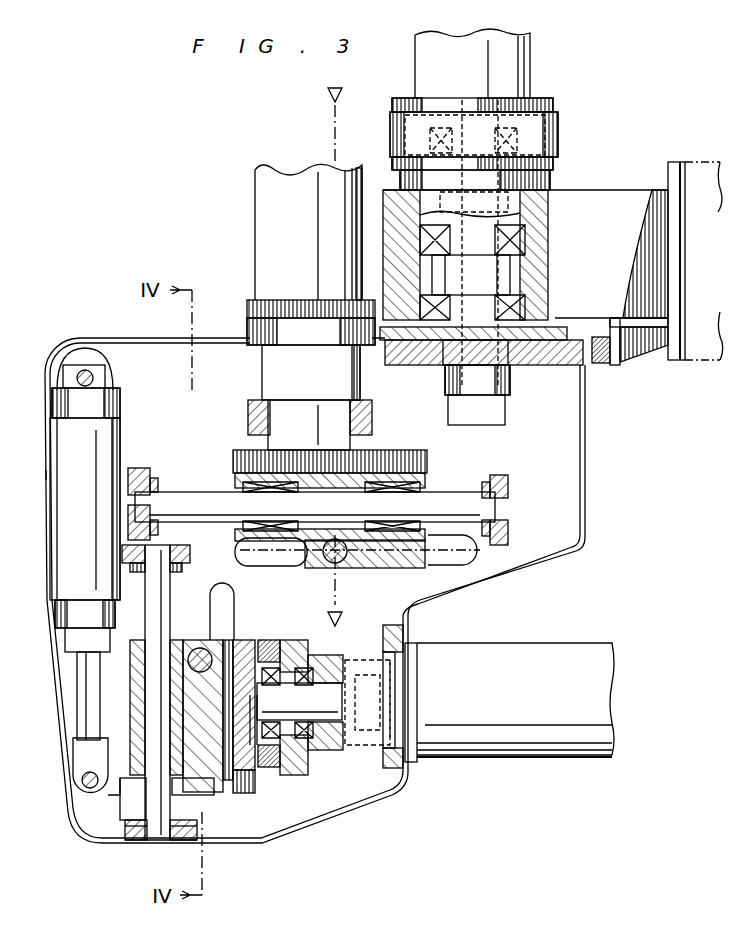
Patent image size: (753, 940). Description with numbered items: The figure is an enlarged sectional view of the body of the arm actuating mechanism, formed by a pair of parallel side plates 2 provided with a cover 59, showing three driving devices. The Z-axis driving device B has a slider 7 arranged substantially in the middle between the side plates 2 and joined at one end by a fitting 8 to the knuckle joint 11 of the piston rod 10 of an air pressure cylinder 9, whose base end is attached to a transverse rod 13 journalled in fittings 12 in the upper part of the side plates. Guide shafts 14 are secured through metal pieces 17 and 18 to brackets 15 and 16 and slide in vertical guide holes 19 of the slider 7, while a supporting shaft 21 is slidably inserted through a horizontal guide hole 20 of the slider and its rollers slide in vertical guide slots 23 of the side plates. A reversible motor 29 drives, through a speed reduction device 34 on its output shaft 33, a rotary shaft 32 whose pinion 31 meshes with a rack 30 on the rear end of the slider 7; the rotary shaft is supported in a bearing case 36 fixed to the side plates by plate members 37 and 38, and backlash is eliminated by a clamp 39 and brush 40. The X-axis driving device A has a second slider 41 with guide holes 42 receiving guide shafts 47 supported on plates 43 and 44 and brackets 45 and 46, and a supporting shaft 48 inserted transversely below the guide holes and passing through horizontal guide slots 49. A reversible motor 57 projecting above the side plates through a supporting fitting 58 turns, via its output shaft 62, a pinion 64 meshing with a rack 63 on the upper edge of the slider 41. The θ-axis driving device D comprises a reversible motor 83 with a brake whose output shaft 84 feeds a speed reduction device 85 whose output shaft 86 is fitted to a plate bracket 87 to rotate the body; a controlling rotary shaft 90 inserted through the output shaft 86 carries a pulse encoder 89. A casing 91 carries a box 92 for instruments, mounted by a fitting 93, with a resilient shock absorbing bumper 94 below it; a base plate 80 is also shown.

The side plates 2 is at (110, 340).
The slider 7 is at (205, 794).
The fitting 8 is at (108, 792).
The air pressure cylinder 9 is at (62, 512).
The piston rod 10 is at (80, 676).
The knuckle joint 11 is at (75, 762).
The fittings 12 is at (68, 356).
The transverse rod 13 is at (62, 374).
The guide shafts 14 is at (127, 832).
The bracket 15 is at (122, 552).
The bracket 16 is at (140, 840).
The metal piece 17 is at (138, 574).
The metal piece 18 is at (136, 800).
The vertical guide holes 19 is at (186, 794).
The horizontal guide hole 20 is at (200, 648).
The supporting shaft 21 is at (226, 650).
The vertical guide slots 23 is at (224, 592).
The reversible motor 29 is at (530, 758).
The rack 30 is at (240, 793).
The pinion 31 is at (258, 760).
The rotary shaft 32 is at (310, 740).
The output shaft 33 is at (392, 770).
The speed reduction device 34 is at (358, 748).
The bearing case 36 is at (292, 775).
The plate member 37 is at (272, 768).
The plate member 38 is at (410, 766).
The clamp 39 is at (266, 638).
The brush 40 is at (296, 640).
The second slider 41 is at (418, 568).
The guide holes 42 is at (424, 488).
The plate 43 is at (155, 480).
The plate 44 is at (482, 545).
The bracket 45 is at (138, 468).
The bracket 46 is at (508, 488).
The guide shafts 47 is at (462, 498).
The supporting shaft 48 is at (345, 562).
The guide slots 49 is at (438, 560).
The reversible motor 57 is at (262, 204).
The supporting fitting 58 is at (248, 330).
The cover 59 is at (44, 478).
The output shaft 62 is at (268, 445).
The rack 63 is at (426, 462).
The pinion 64 is at (352, 448).
The base plate 80 is at (558, 366).
The reversible motor 83 is at (518, 54).
The output shaft 84 is at (470, 112).
The speed reduction device 85 is at (532, 120).
The output shaft 86 is at (512, 283).
The plate bracket 87 is at (565, 332).
The pulse encoder 89 is at (508, 412).
The controlling rotary shaft 90 is at (498, 376).
The casing 91 is at (548, 210).
The box 92 is at (615, 205).
The fitting 93 is at (675, 162).
The resilient shock absorbing bumper 94 is at (602, 364).
The X-axis driving device A is at (244, 384).
The Z-axis driving device B is at (212, 570).
The θ-axis driving device D is at (581, 128).